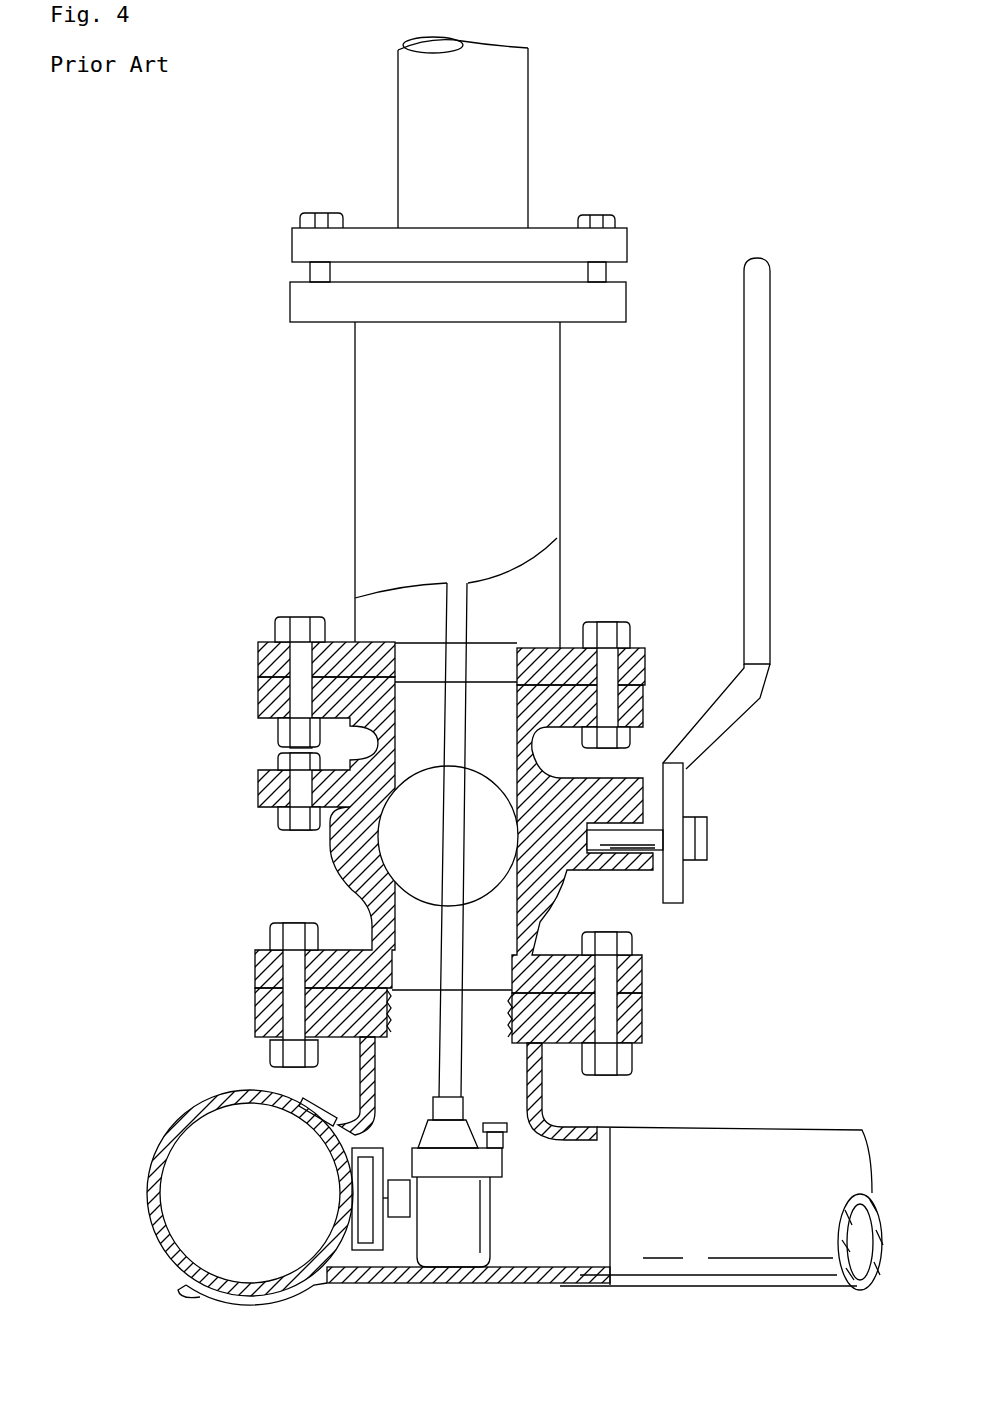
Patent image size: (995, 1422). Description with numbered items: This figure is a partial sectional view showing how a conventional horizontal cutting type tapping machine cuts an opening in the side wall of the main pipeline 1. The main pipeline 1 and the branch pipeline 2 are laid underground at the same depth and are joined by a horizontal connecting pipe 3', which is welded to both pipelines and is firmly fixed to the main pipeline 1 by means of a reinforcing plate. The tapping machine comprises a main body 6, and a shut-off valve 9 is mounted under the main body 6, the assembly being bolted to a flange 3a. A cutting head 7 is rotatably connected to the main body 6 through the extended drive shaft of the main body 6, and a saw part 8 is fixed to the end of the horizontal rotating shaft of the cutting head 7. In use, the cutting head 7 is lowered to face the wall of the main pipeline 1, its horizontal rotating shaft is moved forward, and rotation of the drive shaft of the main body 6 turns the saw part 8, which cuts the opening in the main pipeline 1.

The main pipeline 1 is at (207, 1280).
The branch pipeline 2 is at (730, 1263).
The flange 3a is at (643, 1020).
The connecting pipe 3' is at (468, 1315).
The main body 6 is at (392, 470).
The cutting head 7 is at (460, 1253).
The saw part 8 is at (360, 1243).
The shut-off valve 9 is at (337, 857).